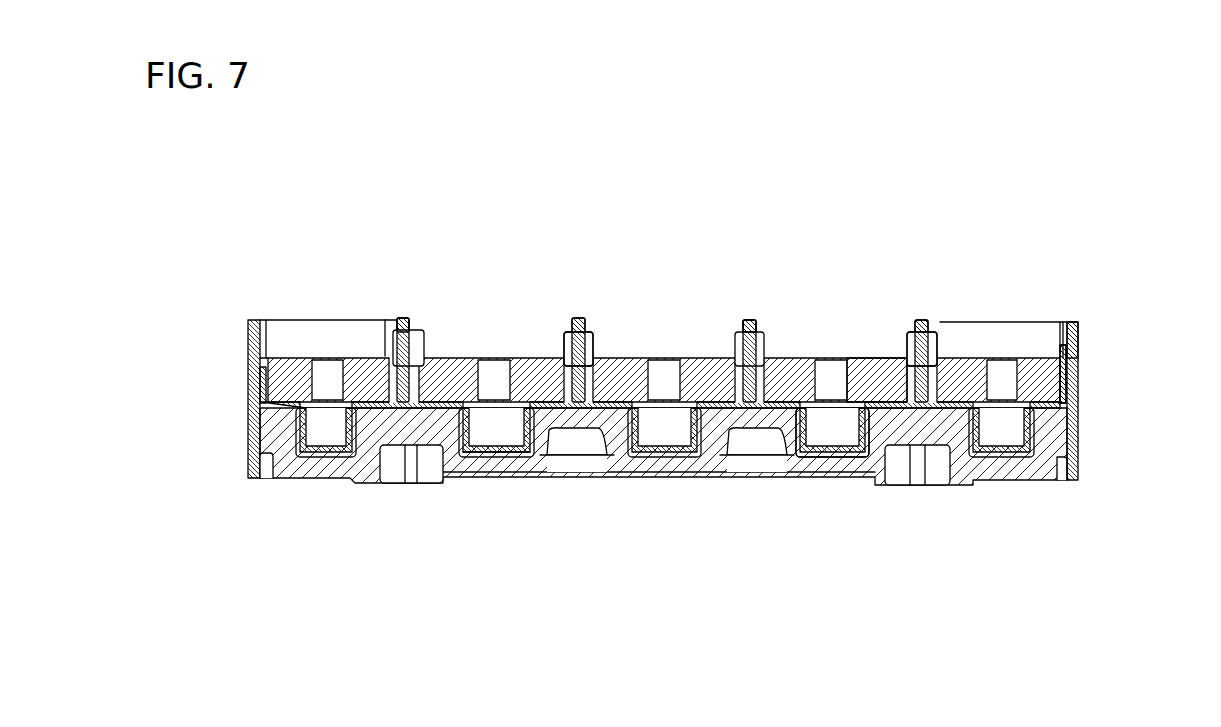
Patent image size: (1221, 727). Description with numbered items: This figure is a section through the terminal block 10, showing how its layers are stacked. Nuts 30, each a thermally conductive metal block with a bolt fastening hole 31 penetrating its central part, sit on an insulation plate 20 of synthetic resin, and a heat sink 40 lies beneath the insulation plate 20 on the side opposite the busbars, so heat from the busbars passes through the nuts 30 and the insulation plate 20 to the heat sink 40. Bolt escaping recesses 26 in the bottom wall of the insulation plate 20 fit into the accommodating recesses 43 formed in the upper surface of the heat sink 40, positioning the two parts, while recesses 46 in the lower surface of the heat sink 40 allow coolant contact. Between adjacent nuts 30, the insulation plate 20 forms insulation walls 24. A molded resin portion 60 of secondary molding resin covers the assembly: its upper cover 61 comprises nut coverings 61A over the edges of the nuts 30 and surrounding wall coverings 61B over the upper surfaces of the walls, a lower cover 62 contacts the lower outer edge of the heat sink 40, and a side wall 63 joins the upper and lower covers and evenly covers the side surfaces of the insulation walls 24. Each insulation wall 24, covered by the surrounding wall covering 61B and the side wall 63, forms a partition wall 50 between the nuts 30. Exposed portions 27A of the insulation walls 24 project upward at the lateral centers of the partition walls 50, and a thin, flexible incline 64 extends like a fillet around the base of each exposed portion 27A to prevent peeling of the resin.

The terminal block 10 is at (750, 540).
The insulation plate 20 is at (665, 479).
The insulation wall 24 is at (424, 334).
The bolt escaping recess 26 is at (523, 425).
The exposed portion 27A is at (405, 318).
The nut 30 is at (665, 312).
The bolt fastening hole 31 is at (840, 357).
The heat sink 40 is at (1029, 492).
The accommodating recess 43 is at (850, 444).
The recess 46 is at (553, 442).
The partition wall 50 is at (607, 348).
The molded resin portion 60 is at (1068, 391).
The upper cover 61 is at (1128, 352).
The nut covering 61A is at (1070, 326).
The surrounding wall covering 61B is at (1068, 352).
The lower cover 62 is at (264, 478).
The side wall 63 is at (628, 392).
The incline 64 is at (589, 333).